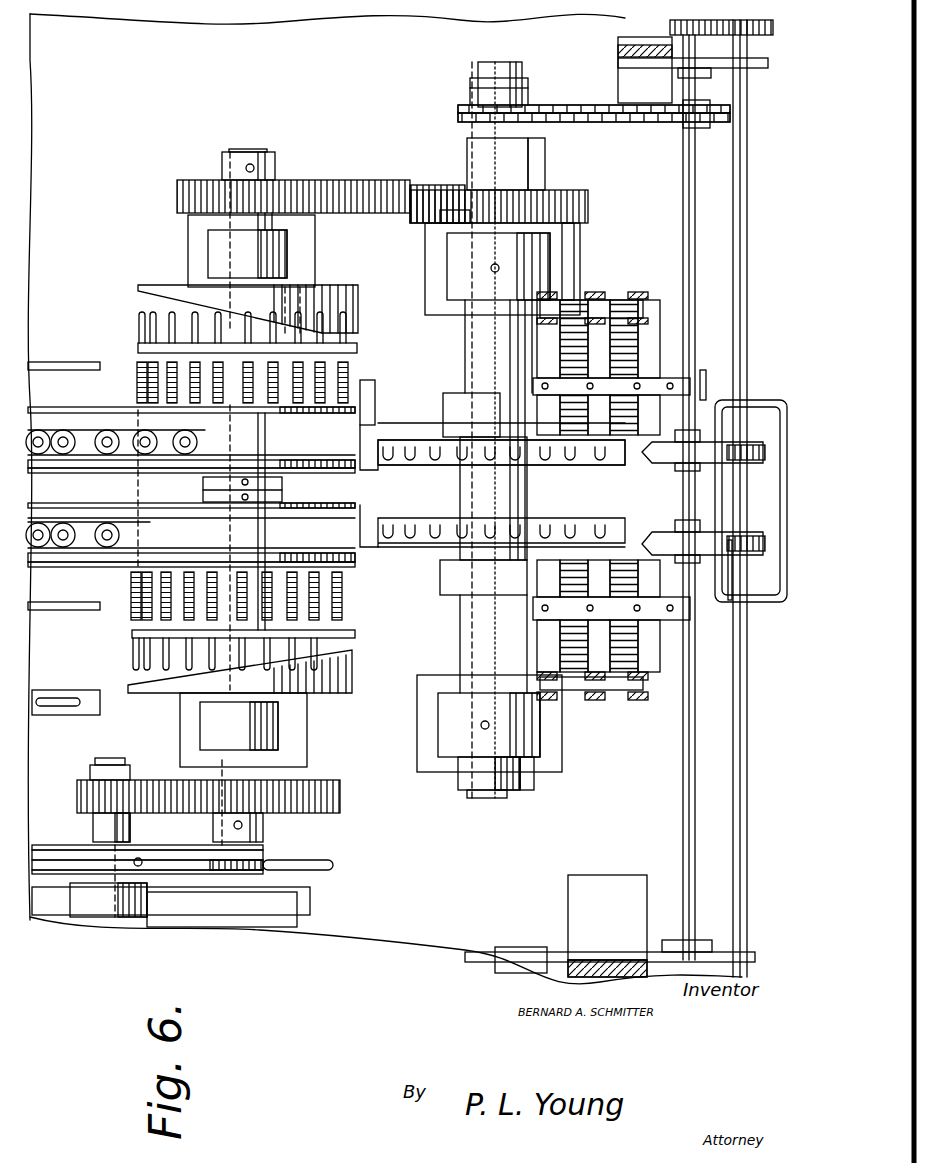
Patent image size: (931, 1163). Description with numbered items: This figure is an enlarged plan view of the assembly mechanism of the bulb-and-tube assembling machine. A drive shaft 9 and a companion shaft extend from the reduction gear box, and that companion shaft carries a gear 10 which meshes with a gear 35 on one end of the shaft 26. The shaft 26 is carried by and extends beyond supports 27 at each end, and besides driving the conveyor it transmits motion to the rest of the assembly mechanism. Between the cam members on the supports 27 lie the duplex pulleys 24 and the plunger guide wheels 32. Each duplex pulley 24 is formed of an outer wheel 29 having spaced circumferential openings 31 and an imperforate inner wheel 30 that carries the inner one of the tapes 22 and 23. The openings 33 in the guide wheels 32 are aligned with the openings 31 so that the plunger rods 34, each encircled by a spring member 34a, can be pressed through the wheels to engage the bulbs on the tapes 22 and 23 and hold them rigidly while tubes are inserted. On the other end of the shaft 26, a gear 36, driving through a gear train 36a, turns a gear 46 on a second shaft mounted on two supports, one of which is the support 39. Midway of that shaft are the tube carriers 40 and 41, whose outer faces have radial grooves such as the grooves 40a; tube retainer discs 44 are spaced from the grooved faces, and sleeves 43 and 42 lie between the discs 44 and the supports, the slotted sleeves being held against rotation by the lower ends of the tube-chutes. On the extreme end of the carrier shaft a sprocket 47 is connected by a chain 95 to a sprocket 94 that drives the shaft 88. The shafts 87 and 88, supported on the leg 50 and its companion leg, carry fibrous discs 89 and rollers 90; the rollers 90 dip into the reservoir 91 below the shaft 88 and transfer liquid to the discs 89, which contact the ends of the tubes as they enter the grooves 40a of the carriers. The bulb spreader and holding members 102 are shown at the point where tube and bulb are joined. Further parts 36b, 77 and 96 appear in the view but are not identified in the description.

The drive shaft 9 is at (90, 830).
The gear 10 is at (88, 775).
The tape 22 is at (45, 410).
The tape 23 is at (45, 562).
The duplex pulley 24 is at (140, 540).
The shaft 26 is at (242, 150).
The support 27 is at (280, 248).
The outer wheel 29 is at (140, 410).
The inner wheel 30 is at (355, 328).
The circumferential openings 31 is at (496, 70).
The plunger guide wheel 32 is at (140, 343).
The openings 33 is at (610, 258).
The plunger rod 34 is at (142, 316).
The spring member 34a is at (137, 365).
The gear 35 is at (178, 780).
The gear 36 is at (178, 182).
The gear train 36a is at (380, 184).
The gear 36b is at (430, 184).
The support 39 is at (522, 780).
The tube carrier 40 is at (440, 432).
The radial grooves 40a is at (458, 395).
The tube carrier 41 is at (405, 468).
The sleeve 42 is at (402, 548).
The sleeve 43 is at (455, 600).
The tube retainer disc 44 is at (405, 440).
The gear 46 is at (590, 220).
The sprocket 47 is at (461, 105).
The leg 50 is at (566, 955).
The bar 77 is at (625, 698).
The shaft 87 is at (698, 160).
The shaft 88 is at (740, 225).
The fibrous disc 89 is at (720, 400).
The roller 90 is at (750, 585).
The reservoir 91 is at (726, 404).
The sprocket 94 is at (690, 128).
The chain 95 is at (595, 123).
The gear 96 is at (672, 24).
The bulb spreader and holding member 102 is at (368, 420).